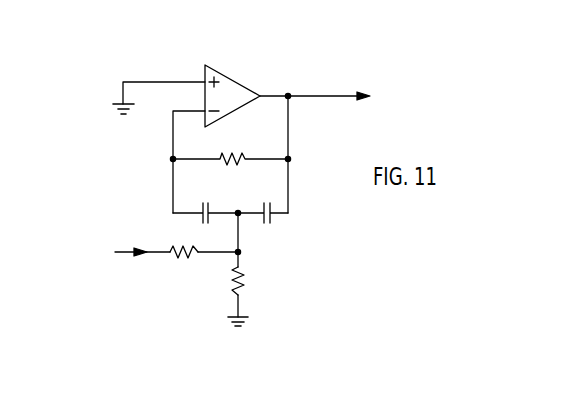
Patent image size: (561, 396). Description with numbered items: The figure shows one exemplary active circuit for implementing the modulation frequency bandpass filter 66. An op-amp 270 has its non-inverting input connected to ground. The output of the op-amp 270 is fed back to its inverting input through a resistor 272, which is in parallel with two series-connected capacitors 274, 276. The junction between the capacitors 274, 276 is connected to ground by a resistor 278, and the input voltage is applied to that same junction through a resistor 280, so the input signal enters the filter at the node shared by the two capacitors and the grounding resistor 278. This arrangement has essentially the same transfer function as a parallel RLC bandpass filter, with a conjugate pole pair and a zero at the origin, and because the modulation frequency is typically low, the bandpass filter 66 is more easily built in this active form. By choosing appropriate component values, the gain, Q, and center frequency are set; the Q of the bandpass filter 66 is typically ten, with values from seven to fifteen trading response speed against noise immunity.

The modulation frequency bandpass filter 66 is at (314, 49).
The op-amp 270 is at (234, 78).
The resistor 272 is at (229, 150).
The capacitor 274 is at (207, 201).
The capacitor 276 is at (268, 229).
The resistor 278 is at (243, 276).
The resistor 280 is at (190, 260).